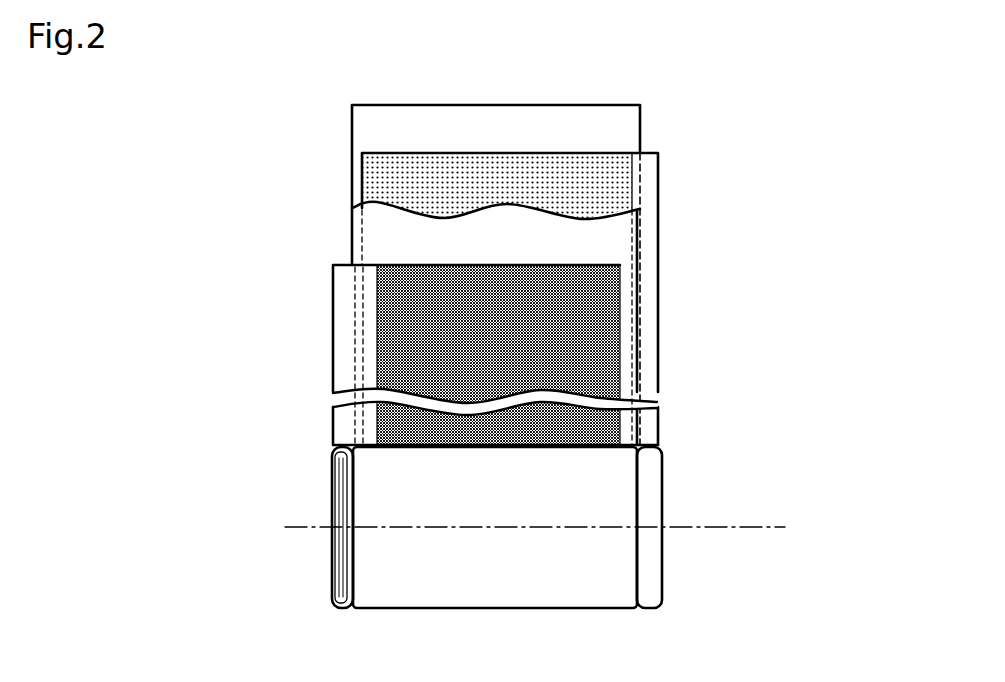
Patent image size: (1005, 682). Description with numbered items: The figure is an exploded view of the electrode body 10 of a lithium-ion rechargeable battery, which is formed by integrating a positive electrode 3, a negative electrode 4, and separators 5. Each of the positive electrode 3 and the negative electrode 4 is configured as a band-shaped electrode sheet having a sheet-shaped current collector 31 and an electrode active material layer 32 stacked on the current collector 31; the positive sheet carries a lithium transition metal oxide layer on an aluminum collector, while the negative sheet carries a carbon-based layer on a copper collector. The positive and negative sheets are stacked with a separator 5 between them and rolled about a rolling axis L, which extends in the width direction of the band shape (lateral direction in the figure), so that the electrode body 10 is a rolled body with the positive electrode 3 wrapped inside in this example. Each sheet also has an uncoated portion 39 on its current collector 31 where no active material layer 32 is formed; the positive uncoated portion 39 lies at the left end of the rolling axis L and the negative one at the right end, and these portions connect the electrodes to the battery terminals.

The separator 5 is at (362, 130).
The negative electrode 4 is at (797, 165).
The positive electrode 3 is at (178, 255).
The current collector 31 is at (659, 238).
The electrode active material layer 32 is at (625, 188).
The uncoated portion 39 is at (645, 275).
The electrode body 10 is at (767, 597).
The rolling axis L is at (768, 526).